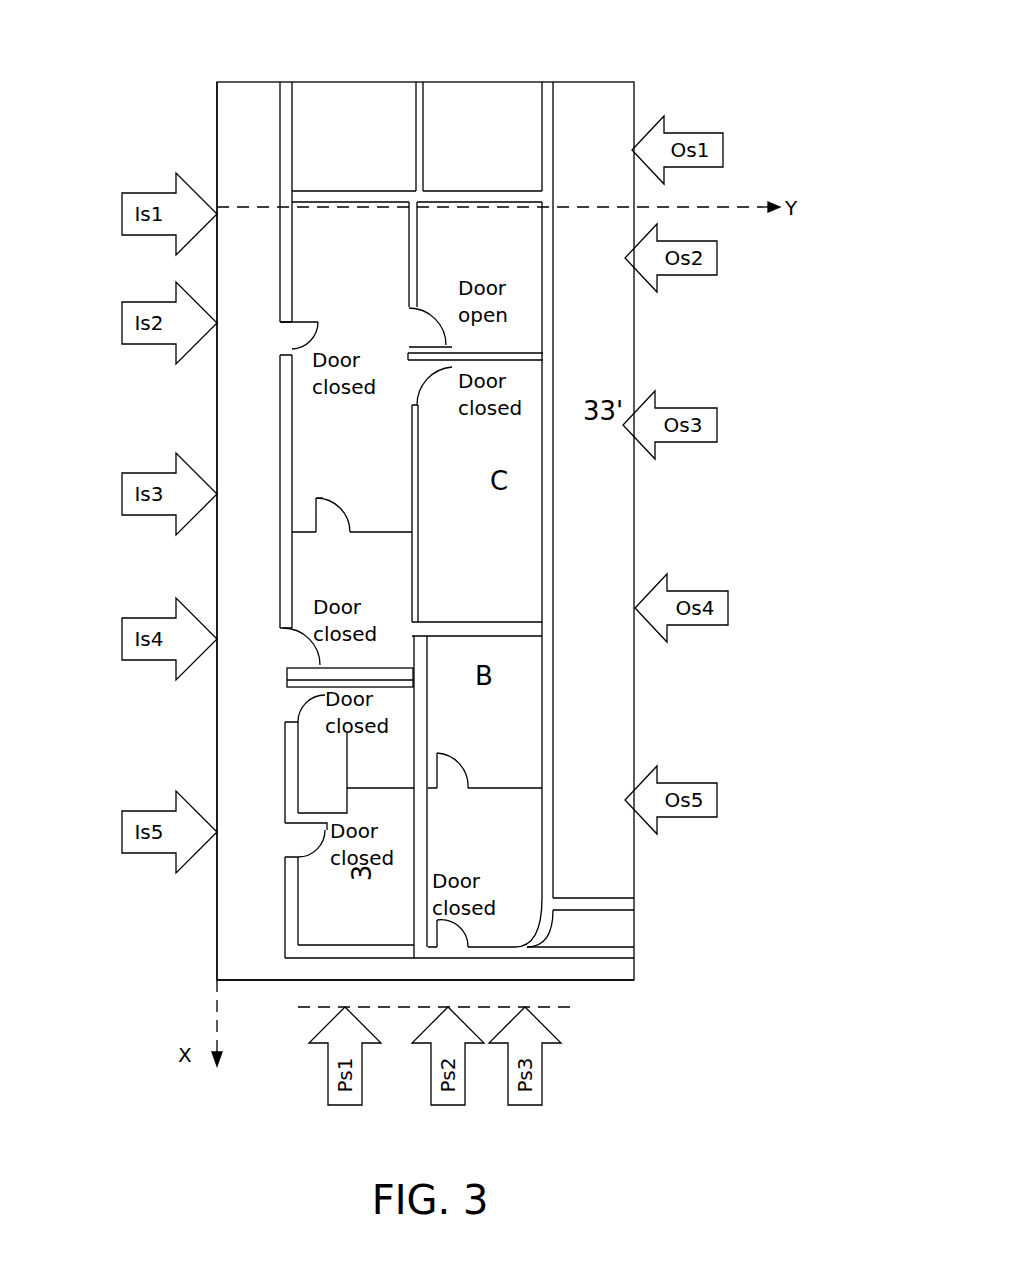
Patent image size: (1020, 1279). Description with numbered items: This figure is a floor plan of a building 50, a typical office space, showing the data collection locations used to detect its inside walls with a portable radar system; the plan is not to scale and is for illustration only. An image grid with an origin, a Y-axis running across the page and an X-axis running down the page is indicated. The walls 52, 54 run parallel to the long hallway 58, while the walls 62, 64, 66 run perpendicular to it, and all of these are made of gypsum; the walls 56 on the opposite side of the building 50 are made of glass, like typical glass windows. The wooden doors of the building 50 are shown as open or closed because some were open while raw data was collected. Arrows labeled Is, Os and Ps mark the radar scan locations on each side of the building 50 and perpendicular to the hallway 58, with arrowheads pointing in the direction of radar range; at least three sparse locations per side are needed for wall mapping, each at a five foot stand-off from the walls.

The building 50 is at (158, 137).
The wall 52 is at (284, 82).
The wall 54 is at (419, 82).
The walls 56 is at (548, 82).
The long hallway 58 is at (240, 390).
The wall 62 is at (372, 788).
The wall 64 is at (430, 697).
The wall 66 is at (636, 950).